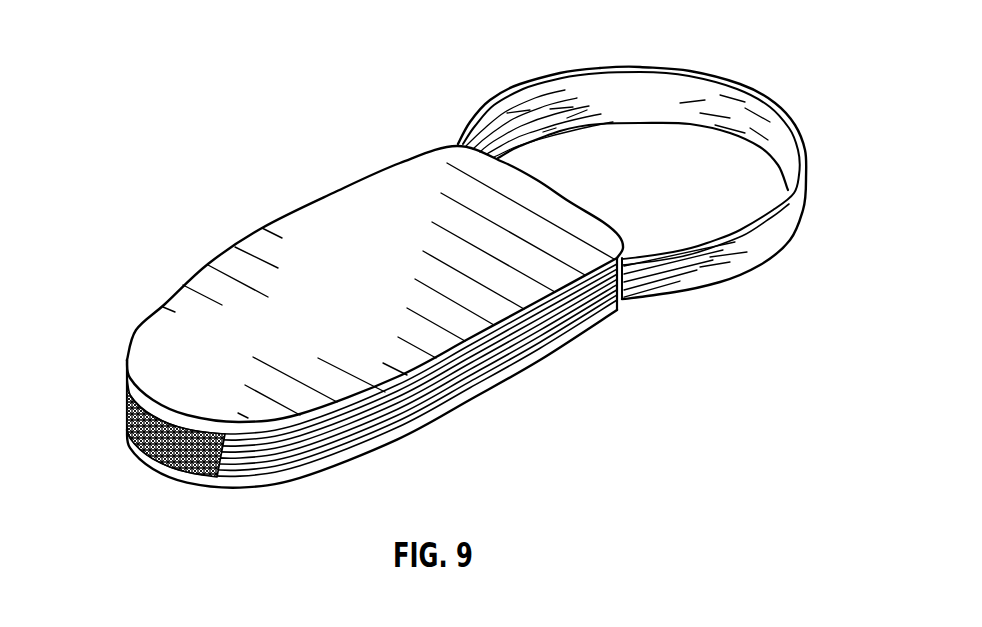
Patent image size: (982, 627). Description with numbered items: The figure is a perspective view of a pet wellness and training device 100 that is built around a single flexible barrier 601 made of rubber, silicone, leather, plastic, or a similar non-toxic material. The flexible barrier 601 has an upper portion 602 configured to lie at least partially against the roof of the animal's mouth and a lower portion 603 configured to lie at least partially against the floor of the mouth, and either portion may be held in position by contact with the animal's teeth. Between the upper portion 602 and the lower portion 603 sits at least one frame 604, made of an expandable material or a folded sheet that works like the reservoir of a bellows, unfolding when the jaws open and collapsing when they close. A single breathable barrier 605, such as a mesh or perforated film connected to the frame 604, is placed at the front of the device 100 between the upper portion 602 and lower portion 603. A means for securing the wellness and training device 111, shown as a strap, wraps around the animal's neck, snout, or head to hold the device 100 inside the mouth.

The pet wellness and training device 100 is at (156, 201).
The means for securing the wellness and training device 111 is at (797, 137).
The flexible barrier 601 is at (619, 282).
The upper portion 602 is at (123, 351).
The lower portion 603 is at (136, 448).
The frame 604 is at (458, 379).
The breathable barrier 605 is at (126, 398).